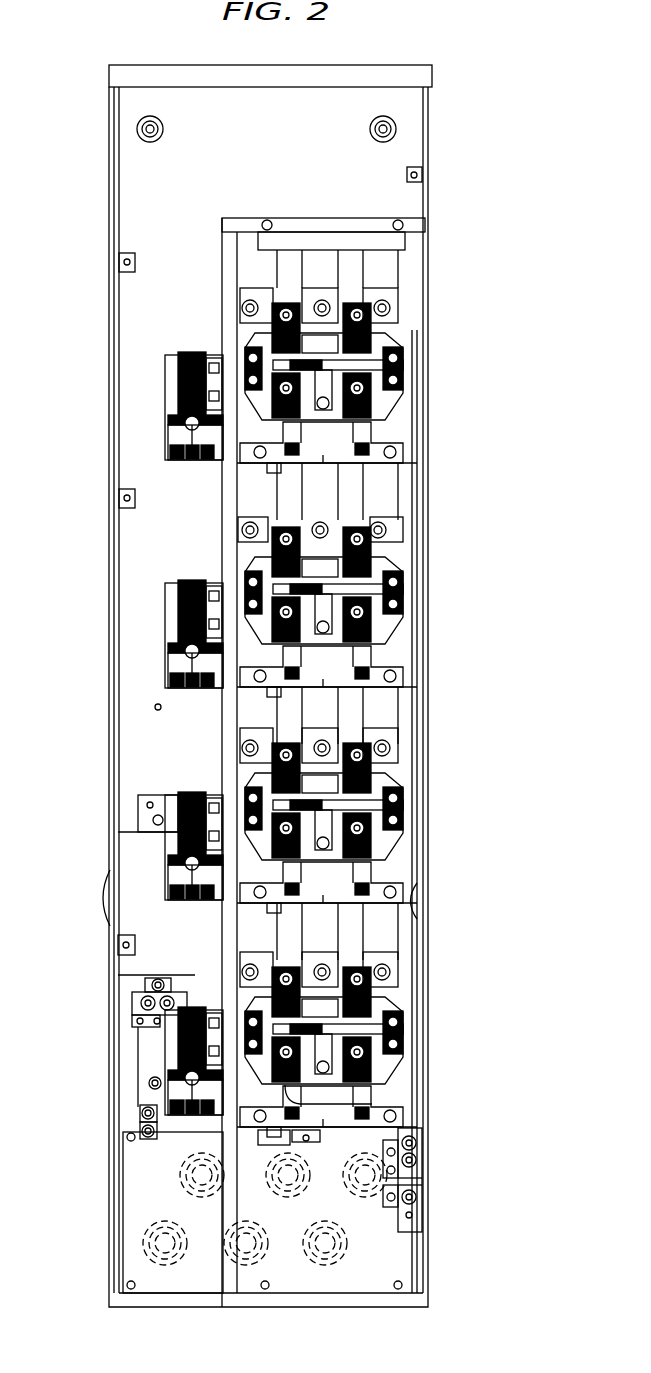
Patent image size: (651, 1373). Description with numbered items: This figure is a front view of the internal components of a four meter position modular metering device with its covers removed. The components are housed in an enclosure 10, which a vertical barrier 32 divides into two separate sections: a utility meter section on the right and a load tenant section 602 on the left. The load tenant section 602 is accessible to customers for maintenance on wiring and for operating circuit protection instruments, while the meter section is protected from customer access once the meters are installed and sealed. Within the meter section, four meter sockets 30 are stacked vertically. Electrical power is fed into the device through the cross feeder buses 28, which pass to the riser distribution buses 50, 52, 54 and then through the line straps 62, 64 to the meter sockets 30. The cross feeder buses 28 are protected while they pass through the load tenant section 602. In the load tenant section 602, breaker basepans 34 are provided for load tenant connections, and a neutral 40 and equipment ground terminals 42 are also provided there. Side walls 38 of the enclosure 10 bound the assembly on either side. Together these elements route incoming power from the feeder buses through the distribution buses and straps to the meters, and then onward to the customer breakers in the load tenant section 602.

The enclosure 10 is at (282, 141).
The cross feeder buses 28 is at (370, 918).
The meter sockets 30 is at (358, 325).
The barrier 32 is at (223, 273).
The breaker basepans 34 is at (165, 405).
The side wall 38 is at (136, 912).
The neutral 40 is at (148, 1068).
The equipment ground terminals 42 is at (395, 1162).
The riser distribution bus 50 is at (360, 296).
The riser distribution bus 52 is at (320, 290).
The riser distribution bus 54 is at (275, 287).
The line strap 62 is at (385, 525).
The line strap 64 is at (273, 523).
The load tenant section 602 is at (136, 602).